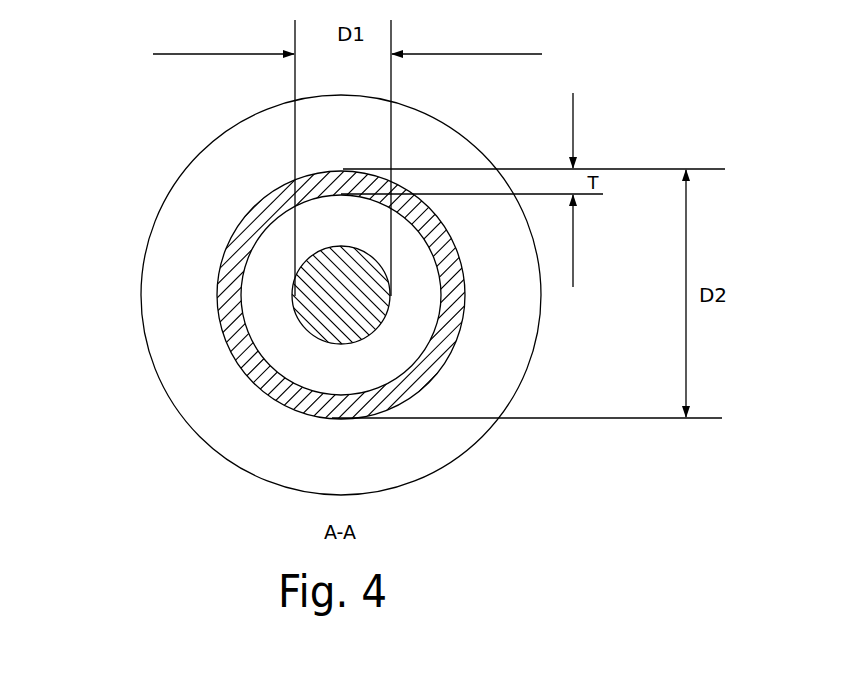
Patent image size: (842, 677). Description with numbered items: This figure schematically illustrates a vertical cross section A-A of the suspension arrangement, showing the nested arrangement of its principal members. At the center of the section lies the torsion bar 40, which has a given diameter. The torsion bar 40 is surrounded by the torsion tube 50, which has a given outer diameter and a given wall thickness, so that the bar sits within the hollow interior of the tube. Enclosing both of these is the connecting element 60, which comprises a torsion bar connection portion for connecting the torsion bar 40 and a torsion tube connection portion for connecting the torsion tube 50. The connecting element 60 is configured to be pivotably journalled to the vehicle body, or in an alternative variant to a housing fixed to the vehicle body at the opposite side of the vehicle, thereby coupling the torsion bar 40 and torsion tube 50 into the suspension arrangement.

The torsion bar 40 is at (300, 328).
The torsion tube 50 is at (278, 410).
The connecting element 60 is at (181, 160).